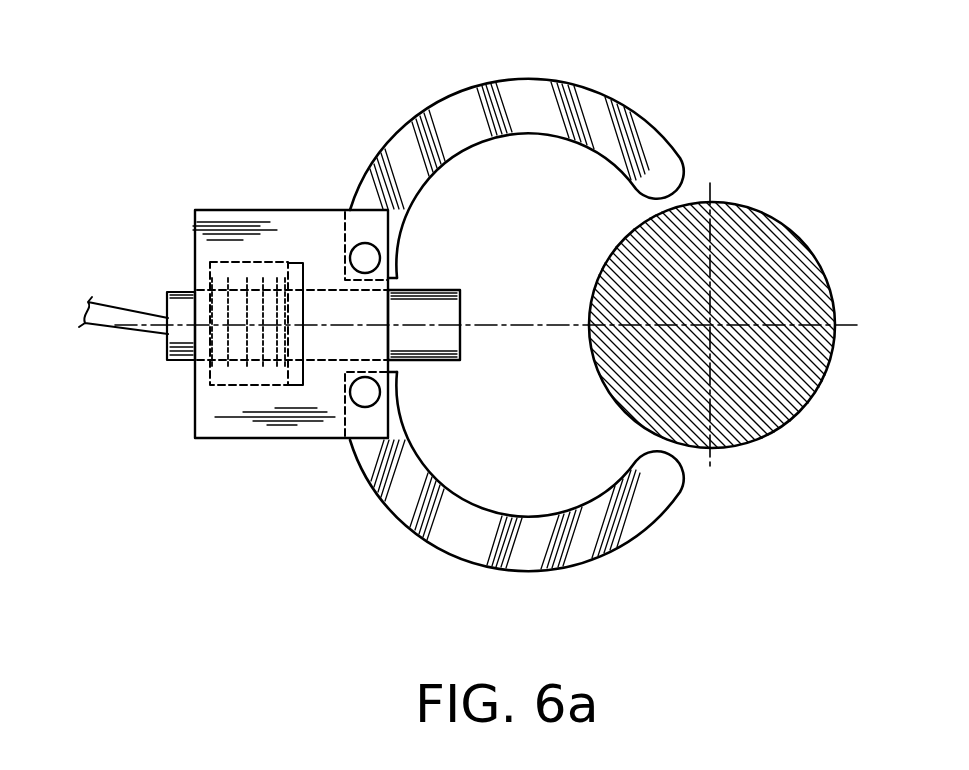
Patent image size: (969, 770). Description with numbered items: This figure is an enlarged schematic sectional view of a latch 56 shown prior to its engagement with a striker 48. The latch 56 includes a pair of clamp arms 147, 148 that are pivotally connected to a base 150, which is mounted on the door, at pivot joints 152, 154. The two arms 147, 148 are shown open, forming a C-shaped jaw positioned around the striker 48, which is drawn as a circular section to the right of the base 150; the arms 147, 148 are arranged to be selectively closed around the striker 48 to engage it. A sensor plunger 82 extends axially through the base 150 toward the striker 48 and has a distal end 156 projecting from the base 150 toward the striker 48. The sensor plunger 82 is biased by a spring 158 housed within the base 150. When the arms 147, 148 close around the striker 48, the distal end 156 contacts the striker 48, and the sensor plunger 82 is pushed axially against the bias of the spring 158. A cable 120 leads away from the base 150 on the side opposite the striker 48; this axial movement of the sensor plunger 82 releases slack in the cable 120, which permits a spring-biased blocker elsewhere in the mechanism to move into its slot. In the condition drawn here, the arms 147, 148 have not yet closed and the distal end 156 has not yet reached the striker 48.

The latch 56 is at (496, 327).
The clamp arm 147 is at (528, 105).
The clamp arm 148 is at (530, 547).
The pivot joint 152 is at (365, 256).
The pivot joint 154 is at (365, 393).
The base 150 is at (215, 440).
The spring 158 is at (232, 288).
The sensor plunger 82 is at (332, 290).
The distal end 156 is at (463, 310).
The striker 48 is at (774, 388).
The cable 120 is at (135, 332).